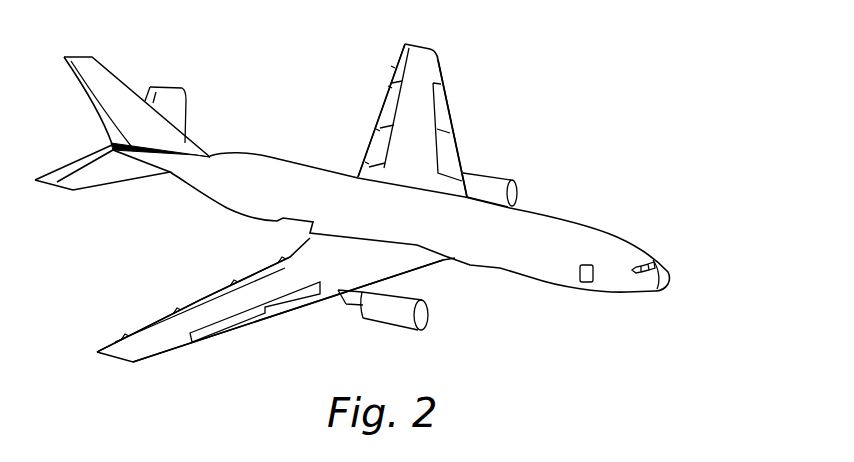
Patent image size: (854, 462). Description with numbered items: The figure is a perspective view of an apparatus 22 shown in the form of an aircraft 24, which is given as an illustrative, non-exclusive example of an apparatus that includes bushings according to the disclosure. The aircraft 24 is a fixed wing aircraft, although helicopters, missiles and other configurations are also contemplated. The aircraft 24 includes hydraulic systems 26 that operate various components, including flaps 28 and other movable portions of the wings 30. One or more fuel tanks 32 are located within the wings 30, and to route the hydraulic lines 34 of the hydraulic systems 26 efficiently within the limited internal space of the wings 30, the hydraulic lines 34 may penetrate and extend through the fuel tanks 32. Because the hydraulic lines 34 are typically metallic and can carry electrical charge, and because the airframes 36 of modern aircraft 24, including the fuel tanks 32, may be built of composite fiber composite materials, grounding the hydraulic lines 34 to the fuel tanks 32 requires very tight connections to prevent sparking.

The apparatus 22 is at (701, 76).
The aircraft 24 is at (606, 92).
The hydraulic systems 26 is at (395, 111).
The flaps 28 is at (402, 122).
The wings 30 is at (462, 146).
The fuel tanks 32 is at (412, 73).
The hydraulic lines 34 is at (462, 90).
The airframes 36 is at (518, 106).